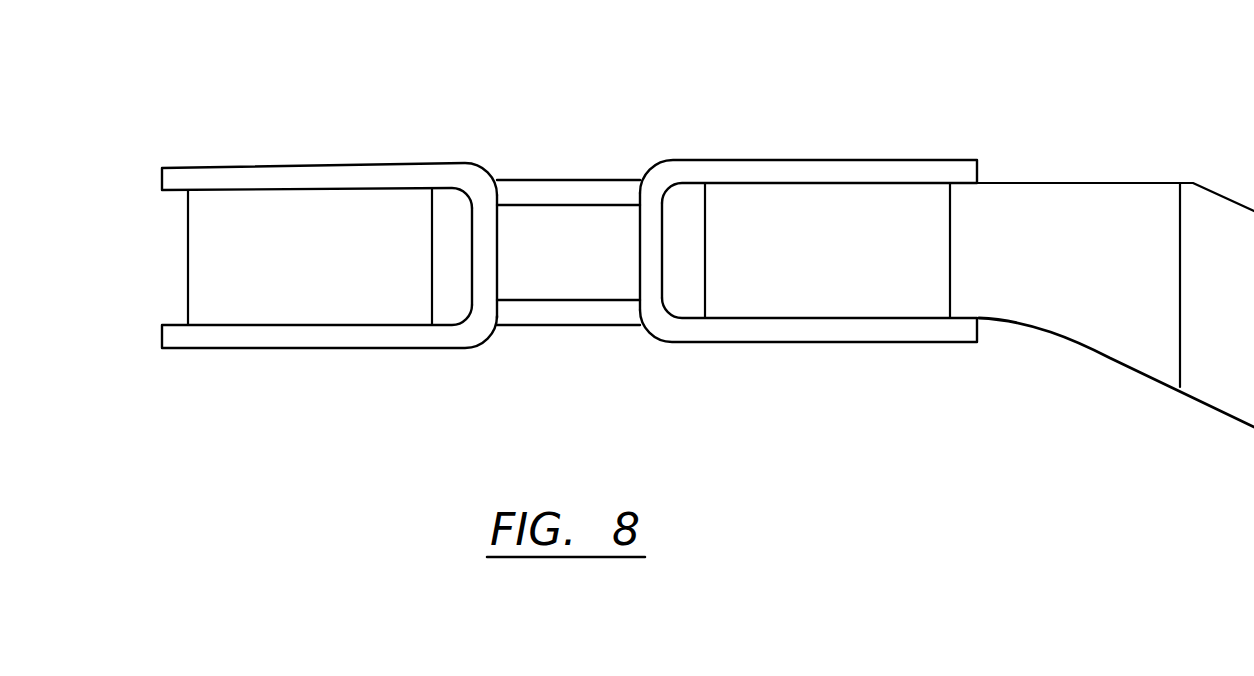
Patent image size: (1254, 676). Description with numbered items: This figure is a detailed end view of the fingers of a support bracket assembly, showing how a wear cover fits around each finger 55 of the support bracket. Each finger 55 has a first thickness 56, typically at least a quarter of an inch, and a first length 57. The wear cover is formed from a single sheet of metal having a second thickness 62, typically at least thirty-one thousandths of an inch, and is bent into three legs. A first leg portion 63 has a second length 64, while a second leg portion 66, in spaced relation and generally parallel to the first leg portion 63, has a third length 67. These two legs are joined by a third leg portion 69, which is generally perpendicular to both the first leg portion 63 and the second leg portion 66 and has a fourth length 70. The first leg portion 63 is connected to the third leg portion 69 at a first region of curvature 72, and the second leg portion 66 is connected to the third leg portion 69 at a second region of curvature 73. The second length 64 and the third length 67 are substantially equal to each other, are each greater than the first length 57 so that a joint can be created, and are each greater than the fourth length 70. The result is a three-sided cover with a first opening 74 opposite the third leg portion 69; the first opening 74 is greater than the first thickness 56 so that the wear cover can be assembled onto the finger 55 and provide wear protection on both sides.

The finger 55 is at (270, 255).
The first thickness 56 is at (748, 317).
The first length 57 is at (663, 285).
The second thickness 62 is at (176, 120).
The first leg portion 63 is at (172, 178).
The second length 64 is at (473, 105).
The second leg portion 66 is at (173, 339).
The third length 67 is at (162, 360).
The third leg portion 69 is at (650, 273).
The fourth length 70 is at (517, 324).
The first region of curvature 72 is at (662, 178).
The second region of curvature 73 is at (483, 327).
The first opening 74 is at (152, 291).